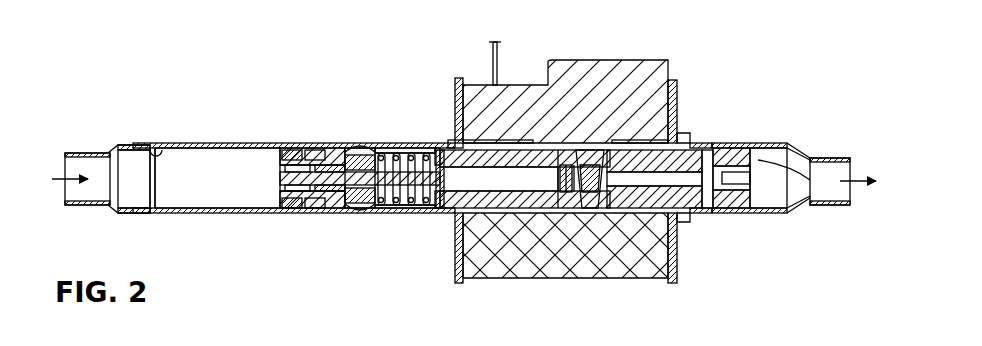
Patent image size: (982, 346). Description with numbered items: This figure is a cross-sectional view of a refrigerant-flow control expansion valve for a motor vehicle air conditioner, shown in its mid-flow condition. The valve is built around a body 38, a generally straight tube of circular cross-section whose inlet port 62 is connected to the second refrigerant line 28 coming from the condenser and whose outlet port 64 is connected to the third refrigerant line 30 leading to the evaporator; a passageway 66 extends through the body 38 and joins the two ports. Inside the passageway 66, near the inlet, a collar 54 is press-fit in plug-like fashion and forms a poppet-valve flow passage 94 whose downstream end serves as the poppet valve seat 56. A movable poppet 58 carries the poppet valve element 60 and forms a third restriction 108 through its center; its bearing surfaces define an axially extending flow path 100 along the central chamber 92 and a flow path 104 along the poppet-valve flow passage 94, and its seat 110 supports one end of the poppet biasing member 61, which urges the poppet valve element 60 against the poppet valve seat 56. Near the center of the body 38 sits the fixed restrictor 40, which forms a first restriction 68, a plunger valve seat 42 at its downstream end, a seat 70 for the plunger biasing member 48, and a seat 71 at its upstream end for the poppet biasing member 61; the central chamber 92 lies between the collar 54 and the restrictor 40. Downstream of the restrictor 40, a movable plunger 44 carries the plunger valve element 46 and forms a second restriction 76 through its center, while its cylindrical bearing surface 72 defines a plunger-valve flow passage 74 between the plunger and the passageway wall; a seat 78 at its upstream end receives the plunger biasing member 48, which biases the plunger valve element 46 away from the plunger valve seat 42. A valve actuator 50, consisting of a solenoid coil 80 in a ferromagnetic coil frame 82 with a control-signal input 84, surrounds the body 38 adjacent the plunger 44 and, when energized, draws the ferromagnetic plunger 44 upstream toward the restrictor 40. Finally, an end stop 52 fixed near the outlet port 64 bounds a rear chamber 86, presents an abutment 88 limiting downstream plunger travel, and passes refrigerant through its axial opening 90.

The second refrigerant line 28 is at (76, 151).
The third refrigerant line 30 is at (830, 158).
The body 38 is at (205, 143).
The restrictor 40 is at (492, 282).
The plunger valve seat 42 is at (640, 212).
The plunger 44 is at (682, 122).
The plunger valve element 46 is at (594, 150).
The plunger biasing member 48 is at (612, 212).
The valve actuator 50 is at (452, 96).
The end stop 52 is at (792, 214).
The collar 54 is at (298, 200).
The poppet valve seat 56 is at (333, 200).
The poppet 58 is at (355, 150).
The poppet valve element 60 is at (333, 150).
The poppet biasing member 61 is at (405, 150).
The inlet port 62 is at (160, 143).
The outlet port 64 is at (810, 158).
The passageway 66 is at (189, 192).
The first restriction 68 is at (542, 212).
The seat 70 is at (562, 150).
The seat 71 is at (420, 148).
The bearing surface 72 is at (706, 145).
The plunger-valve flow passage 74 is at (690, 215).
The second restriction 76 is at (681, 84).
The seat 78 is at (662, 143).
The solenoid coil 80 is at (478, 82).
The coil frame 82 is at (452, 78).
The control-signal input 84 is at (500, 62).
The rear chamber 86 is at (768, 148).
The abutment 88 is at (742, 210).
The opening 90 is at (805, 198).
The central chamber 92 is at (422, 215).
The poppet-valve flow passage 94 is at (290, 148).
The flow path 100 is at (392, 150).
The flow path 104 is at (278, 149).
The third restriction 108 is at (278, 186).
The seat 110 is at (380, 210).